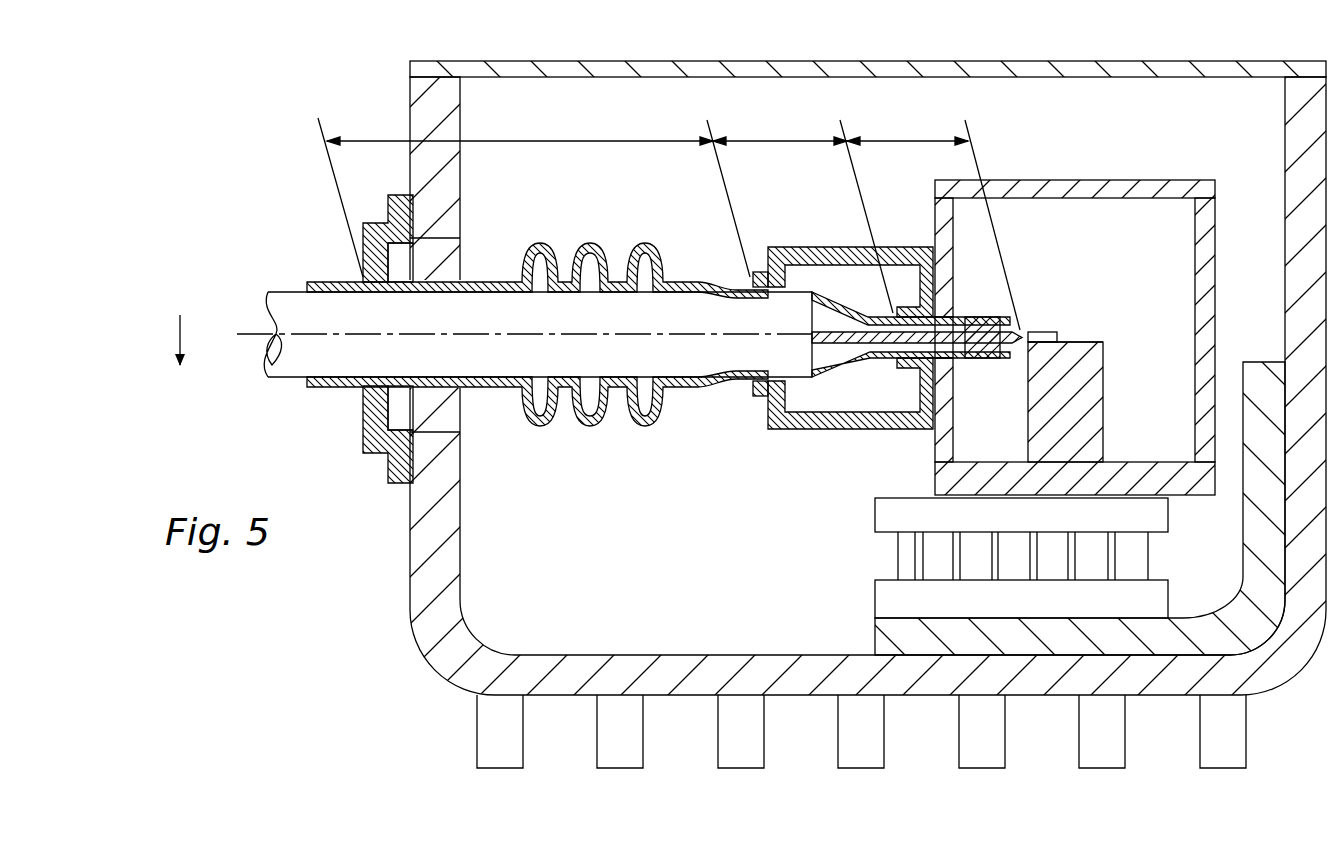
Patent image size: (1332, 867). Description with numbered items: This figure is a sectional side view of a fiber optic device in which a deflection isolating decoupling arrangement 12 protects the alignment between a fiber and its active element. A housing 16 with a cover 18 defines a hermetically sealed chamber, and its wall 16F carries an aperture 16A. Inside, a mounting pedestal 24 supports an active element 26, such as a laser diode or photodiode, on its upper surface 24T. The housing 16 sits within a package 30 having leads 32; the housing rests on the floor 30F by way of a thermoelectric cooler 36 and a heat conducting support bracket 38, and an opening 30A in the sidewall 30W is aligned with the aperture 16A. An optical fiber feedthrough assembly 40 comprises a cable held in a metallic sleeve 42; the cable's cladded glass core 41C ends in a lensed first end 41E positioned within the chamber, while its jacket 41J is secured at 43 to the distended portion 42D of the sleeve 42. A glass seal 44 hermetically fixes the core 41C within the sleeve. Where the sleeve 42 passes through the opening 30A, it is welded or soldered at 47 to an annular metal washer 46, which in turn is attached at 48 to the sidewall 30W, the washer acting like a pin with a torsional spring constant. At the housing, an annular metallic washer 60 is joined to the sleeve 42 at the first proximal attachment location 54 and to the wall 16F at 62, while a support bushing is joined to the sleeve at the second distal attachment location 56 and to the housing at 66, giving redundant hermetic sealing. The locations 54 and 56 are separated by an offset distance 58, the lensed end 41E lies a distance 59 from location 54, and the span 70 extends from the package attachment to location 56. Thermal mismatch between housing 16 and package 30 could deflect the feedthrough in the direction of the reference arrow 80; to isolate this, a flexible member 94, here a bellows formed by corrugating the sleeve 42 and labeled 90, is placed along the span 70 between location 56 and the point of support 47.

The deflection isolating decoupling arrangement 12 is at (622, 212).
The housing 16 is at (1222, 250).
The aperture 16A is at (950, 362).
The wall 16F is at (950, 430).
The cover 18 is at (1084, 188).
The mounting pedestal 24 is at (1100, 398).
The upper surface 24T is at (1104, 342).
The active element 26 is at (1050, 332).
The package 30 is at (390, 612).
The opening 30A is at (440, 432).
The sidewall 30W is at (440, 566).
The floor 30F is at (686, 665).
The leads 32 is at (445, 750).
The thermoelectric cooler 36 is at (890, 557).
The heat conducting support bracket 38 is at (880, 633).
The optical fiber feedthrough assembly 40 is at (623, 440).
The cladded glass core 41C is at (832, 348).
The first end 41E is at (1020, 334).
The jacket 41J is at (770, 356).
The metallic sleeve 42 is at (480, 388).
The distended portion 42D is at (750, 275).
The securing location 43 is at (722, 372).
The glass seal 44 is at (972, 358).
The annular metal washer 46 is at (365, 430).
The attachment / point of support 47 is at (360, 283).
The attachment 48 is at (405, 465).
The first proximal attachment location 54 is at (893, 314).
The second distal attachment location 56 is at (790, 350).
The offset distance 58 is at (805, 142).
The distance 59 is at (925, 142).
The annular metallic washer 60 is at (912, 365).
The attachment 62 is at (912, 430).
The attachment 66 is at (926, 445).
The span 70 is at (583, 142).
The reference arrow 80 is at (180, 340).
The bellows convolution 90 is at (648, 243).
The flexible member 94 is at (588, 232).